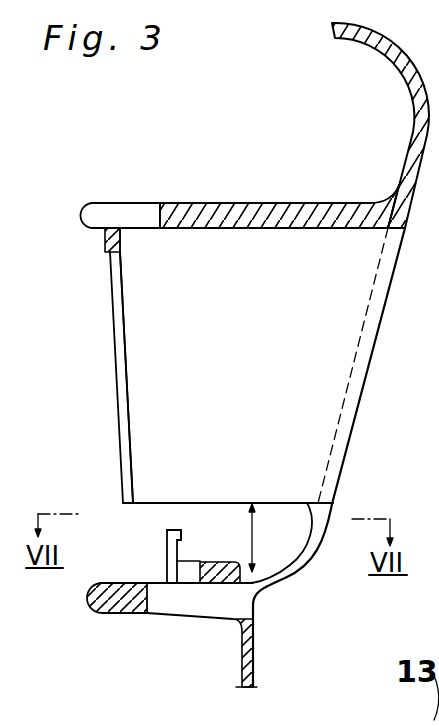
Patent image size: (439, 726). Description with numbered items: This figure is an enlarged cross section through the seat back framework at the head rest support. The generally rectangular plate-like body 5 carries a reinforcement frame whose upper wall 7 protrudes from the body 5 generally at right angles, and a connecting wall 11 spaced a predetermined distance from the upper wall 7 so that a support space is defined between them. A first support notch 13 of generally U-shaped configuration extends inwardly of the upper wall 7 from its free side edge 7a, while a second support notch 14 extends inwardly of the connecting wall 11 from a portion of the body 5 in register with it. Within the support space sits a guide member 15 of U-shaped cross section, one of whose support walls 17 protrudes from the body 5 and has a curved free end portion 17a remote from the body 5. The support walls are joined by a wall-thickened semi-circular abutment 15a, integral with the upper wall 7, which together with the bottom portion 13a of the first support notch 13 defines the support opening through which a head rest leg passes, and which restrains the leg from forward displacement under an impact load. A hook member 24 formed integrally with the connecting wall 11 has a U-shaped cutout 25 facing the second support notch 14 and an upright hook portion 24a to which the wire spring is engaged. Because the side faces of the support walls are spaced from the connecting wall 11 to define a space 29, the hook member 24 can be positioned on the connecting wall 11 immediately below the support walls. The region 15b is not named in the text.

The plate-like body 5 is at (377, 323).
The upper wall 7 is at (248, 212).
The free side edge 7a is at (83, 210).
The connecting wall 11 is at (107, 613).
The first support notch 13 is at (117, 213).
The portion of the first support notch 13a is at (163, 217).
The second support notch 14 is at (225, 602).
The guide member 15 is at (110, 363).
The semi-circular abutment 15a is at (106, 233).
The leg upper end 15b is at (120, 231).
The support wall 17 is at (254, 442).
The free end portion of the support wall 17a is at (123, 393).
The hook member 24 is at (167, 560).
The upright hook portion 24a is at (166, 531).
The U-shaped cutout 25 is at (193, 562).
The space 29 is at (252, 538).